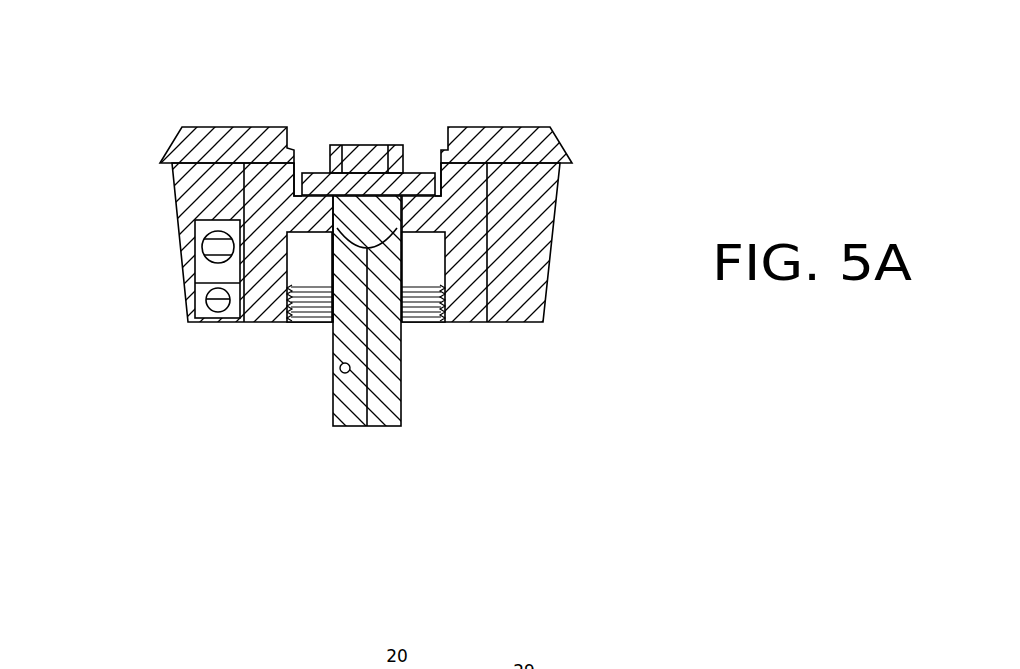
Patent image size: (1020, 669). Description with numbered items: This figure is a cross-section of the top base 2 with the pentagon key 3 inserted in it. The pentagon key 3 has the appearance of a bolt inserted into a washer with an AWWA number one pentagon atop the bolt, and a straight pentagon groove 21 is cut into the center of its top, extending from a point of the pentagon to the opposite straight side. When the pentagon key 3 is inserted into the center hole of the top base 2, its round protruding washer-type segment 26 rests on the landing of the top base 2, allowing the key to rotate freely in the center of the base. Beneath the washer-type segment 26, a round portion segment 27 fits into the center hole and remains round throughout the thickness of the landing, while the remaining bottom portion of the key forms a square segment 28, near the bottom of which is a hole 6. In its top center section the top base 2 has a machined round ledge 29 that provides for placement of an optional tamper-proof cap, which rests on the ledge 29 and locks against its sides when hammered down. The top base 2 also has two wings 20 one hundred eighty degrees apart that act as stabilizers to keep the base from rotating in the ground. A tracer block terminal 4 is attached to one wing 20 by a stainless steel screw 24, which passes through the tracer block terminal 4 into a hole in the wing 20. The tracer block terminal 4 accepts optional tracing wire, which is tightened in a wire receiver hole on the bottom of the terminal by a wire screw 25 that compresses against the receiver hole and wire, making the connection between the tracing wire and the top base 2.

The top base 2 is at (561, 141).
The pentagon key 3 is at (390, 385).
The tracer block terminal 4 is at (195, 268).
The hole 6 is at (332, 367).
The wing 20 is at (192, 196).
The pentagon groove 21 is at (366, 140).
The stainless steel screw 24 is at (228, 253).
The wire screw 25 is at (218, 300).
The washer-type segment 26 is at (300, 188).
The round portion segment 27 is at (383, 208).
The square segment 28 is at (388, 312).
The machined round ledge 29 is at (448, 155).